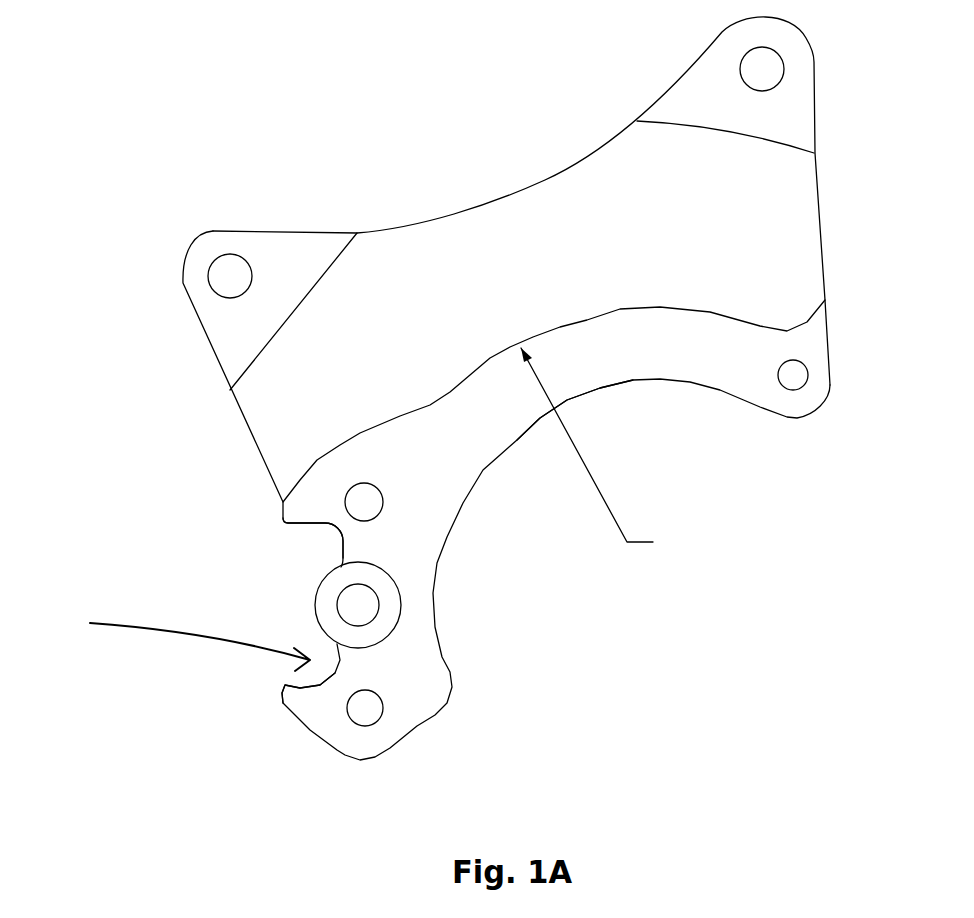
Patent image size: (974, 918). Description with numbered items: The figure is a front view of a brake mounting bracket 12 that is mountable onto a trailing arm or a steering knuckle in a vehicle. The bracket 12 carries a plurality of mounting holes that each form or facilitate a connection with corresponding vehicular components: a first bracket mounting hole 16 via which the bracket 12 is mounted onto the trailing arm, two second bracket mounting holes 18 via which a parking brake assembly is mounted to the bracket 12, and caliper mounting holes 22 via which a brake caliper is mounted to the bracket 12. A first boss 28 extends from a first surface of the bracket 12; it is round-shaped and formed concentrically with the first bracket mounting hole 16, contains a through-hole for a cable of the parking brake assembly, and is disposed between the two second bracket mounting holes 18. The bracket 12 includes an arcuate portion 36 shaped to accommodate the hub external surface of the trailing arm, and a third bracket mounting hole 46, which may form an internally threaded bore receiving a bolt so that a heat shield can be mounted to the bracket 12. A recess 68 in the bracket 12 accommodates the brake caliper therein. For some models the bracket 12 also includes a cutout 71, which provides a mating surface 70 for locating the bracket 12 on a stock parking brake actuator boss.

The brake mounting bracket 12 is at (95, 35).
The first bracket mounting hole 16 is at (379, 606).
The second bracket mounting hole 18 is at (381, 511).
The caliper mounting hole 22 is at (738, 76).
The first boss 28 is at (396, 625).
The arcuate portion 36 is at (573, 401).
The third bracket mounting hole 46 is at (801, 388).
The recess 68 is at (653, 117).
The mating surface 70 is at (292, 527).
The cutout 71 is at (176, 641).